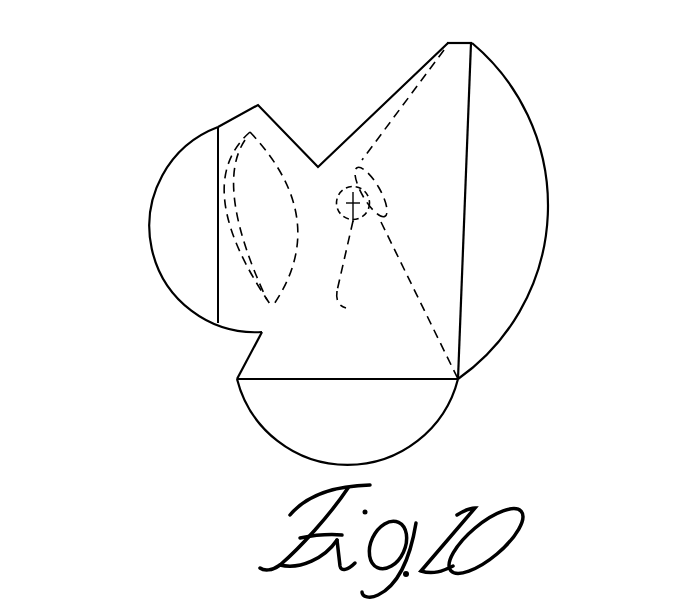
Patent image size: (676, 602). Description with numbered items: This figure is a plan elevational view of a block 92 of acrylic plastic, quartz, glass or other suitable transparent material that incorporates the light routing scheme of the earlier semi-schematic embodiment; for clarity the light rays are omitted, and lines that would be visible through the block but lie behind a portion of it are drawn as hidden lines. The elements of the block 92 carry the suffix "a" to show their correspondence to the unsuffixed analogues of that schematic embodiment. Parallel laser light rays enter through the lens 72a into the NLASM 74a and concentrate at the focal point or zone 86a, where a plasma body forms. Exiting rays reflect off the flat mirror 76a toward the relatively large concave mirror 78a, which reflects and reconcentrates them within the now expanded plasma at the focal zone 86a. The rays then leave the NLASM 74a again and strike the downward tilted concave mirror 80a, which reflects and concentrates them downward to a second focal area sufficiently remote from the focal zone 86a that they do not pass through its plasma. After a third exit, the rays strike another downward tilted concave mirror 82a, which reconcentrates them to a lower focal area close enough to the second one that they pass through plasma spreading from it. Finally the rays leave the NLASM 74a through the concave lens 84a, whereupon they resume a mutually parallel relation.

The lens 72a is at (440, 420).
The NLASM 74a is at (397, 300).
The flat mirror 76a is at (372, 115).
The concave mirror 78a is at (547, 204).
The downward tilted concave mirror 80a is at (250, 133).
The downward tilted concave mirror 82a is at (386, 186).
The concave lens 84a is at (157, 267).
The focal zone 86a is at (353, 203).
The block 92 is at (538, 89).